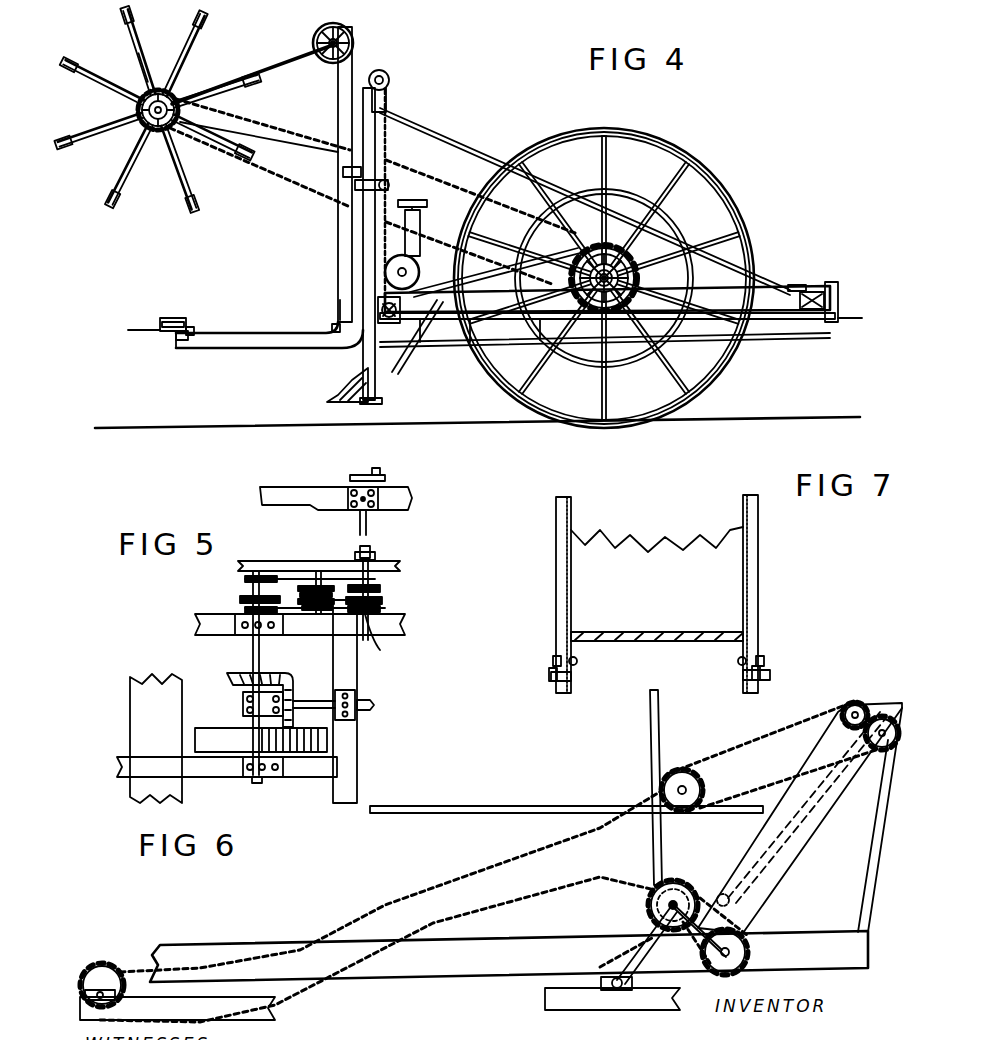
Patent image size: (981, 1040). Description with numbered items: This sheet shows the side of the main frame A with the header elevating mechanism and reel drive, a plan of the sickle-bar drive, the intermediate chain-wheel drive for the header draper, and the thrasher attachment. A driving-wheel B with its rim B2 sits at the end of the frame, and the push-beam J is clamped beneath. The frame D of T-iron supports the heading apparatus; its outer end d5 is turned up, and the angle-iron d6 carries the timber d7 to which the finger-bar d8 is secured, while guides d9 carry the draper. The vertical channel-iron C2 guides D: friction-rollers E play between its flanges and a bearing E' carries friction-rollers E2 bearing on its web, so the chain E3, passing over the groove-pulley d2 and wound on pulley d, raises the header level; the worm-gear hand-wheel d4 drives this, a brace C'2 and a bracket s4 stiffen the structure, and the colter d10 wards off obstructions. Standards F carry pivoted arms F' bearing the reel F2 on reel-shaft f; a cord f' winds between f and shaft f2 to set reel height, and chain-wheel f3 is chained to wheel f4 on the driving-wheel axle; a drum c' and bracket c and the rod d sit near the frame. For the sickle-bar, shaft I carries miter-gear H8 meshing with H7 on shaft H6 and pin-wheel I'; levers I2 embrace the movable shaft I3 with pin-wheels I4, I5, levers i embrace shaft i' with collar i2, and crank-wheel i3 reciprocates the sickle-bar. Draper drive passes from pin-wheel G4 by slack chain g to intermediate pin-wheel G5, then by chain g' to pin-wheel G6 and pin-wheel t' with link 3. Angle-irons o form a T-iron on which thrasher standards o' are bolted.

In FIG. 4, the main frame A is at (607, 316).
In FIG. 5, the main frame A is at (261, 701).
In FIG. 7, the main frame A is at (575, 680).
In FIG. 6, the main frame A is at (474, 855).
In FIG. 4, the driving-wheel B is at (722, 390).
In FIG. 4, the wheel rim B2 is at (628, 362).
In FIG. 4, the push-beam J is at (822, 311).
In FIG. 4, the bracket s4 is at (772, 284).
In FIG. 4, the wheel f4 is at (640, 297).
In FIG. 4, the reel-shaft f is at (130, 109).
In FIG. 4, the chain-wheel f3 is at (135, 88).
In FIG. 4, the reel F2 is at (190, 68).
In FIG. 4, the arms F' is at (254, 140).
In FIG. 4, the belt or cord f' is at (252, 63).
In FIG. 4, the shaft f2 is at (356, 40).
In FIG. 4, the standards F is at (325, 174).
In FIG. 4, the groove-pulley d2 is at (392, 82).
In FIG. 4, the chain E3 is at (390, 102).
In FIG. 4, the diagonal brace C'2 is at (585, 263).
In FIG. 4, the hand-wheel d4 is at (498, 190).
In FIG. 4, the bearing E' is at (330, 177).
In FIG. 4, the friction-rollers E2 is at (392, 180).
In FIG. 4, the vertical channel-iron or guide-piece C2 is at (412, 216).
In FIG. 4, the drum c' is at (434, 272).
In FIG. 4, the drum bracket c is at (389, 299).
In FIG. 4, the grooved pulleys d is at (372, 257).
In FIG. 4, the frame D is at (310, 346).
In FIG. 4, the friction-rollers E is at (322, 293).
In FIG. 4, the finger-bar d8 is at (166, 316).
In FIG. 4, the timber d7 is at (195, 318).
In FIG. 5, the timber d7 is at (410, 500).
In FIG. 4, the angle-iron d6 is at (134, 324).
In FIG. 4, the outer end d5 is at (176, 336).
In FIG. 4, the guides d9 is at (198, 328).
In FIG. 4, the colter or double plow-point d10 is at (330, 398).
In FIG. 5, the crank-wheel i3 is at (392, 478).
In FIG. 5, the shaft I is at (235, 673).
In FIG. 5, the movable levers i is at (386, 599).
In FIG. 6, the movable levers i is at (725, 942).
In FIG. 5, the collar i2 is at (386, 600).
In FIG. 5, the shaft i' is at (381, 635).
In FIG. 5, the movable levers I2 is at (244, 579).
In FIG. 6, the movable levers I2 is at (648, 920).
In FIG. 5, the pin-wheel I' is at (226, 589).
In FIG. 5, the pin-wheel I4 is at (300, 590).
In FIG. 5, the movable shaft I3 is at (318, 585).
In FIG. 5, the pin-wheel I5 is at (263, 679).
In FIG. 5, the miter-gear wheel H8 is at (282, 672).
In FIG. 5, the miter-gear wheel H7 is at (293, 714).
In FIG. 5, the shaft H6 is at (378, 704).
In FIG. 7, the standards o' is at (657, 594).
In FIG. 7, the angle-irons o is at (658, 649).
In FIG. 6, the pin-wheel t' is at (800, 797).
In FIG. 6, the pin-wheel G6 is at (882, 752).
In FIG. 6, the intermediate pin-wheel G5 is at (677, 770).
In FIG. 6, the chain g' is at (773, 756).
In FIG. 6, the endless slack chain g is at (423, 906).
In FIG. 6, the pin-wheel G4 is at (118, 968).
In FIG. 6, the link 3 is at (665, 862).